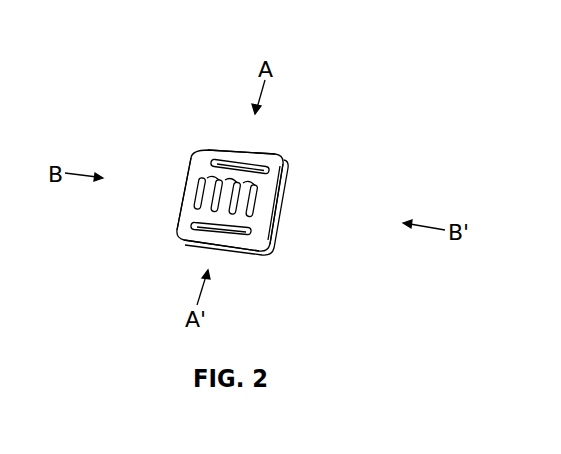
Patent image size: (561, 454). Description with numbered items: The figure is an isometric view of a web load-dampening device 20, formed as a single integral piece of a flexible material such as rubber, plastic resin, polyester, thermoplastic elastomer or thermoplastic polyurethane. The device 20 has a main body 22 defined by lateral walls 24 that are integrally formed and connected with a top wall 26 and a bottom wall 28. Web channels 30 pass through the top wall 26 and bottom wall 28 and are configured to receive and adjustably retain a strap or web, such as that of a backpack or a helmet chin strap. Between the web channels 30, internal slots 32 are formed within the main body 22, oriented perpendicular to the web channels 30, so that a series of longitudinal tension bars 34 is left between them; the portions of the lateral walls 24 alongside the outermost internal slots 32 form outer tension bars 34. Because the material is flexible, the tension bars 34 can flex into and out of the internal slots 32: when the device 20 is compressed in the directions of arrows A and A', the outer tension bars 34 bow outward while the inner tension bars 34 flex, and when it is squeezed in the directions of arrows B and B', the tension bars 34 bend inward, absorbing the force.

The web load-dampening device 20 is at (145, 132).
The main body 22 is at (291, 170).
The lateral walls 24 is at (190, 190).
The top wall 26 is at (251, 150).
The bottom wall 28 is at (190, 248).
The web channels 30 is at (232, 160).
The internal slots 32 is at (199, 204).
The tension bars 34 is at (200, 168).